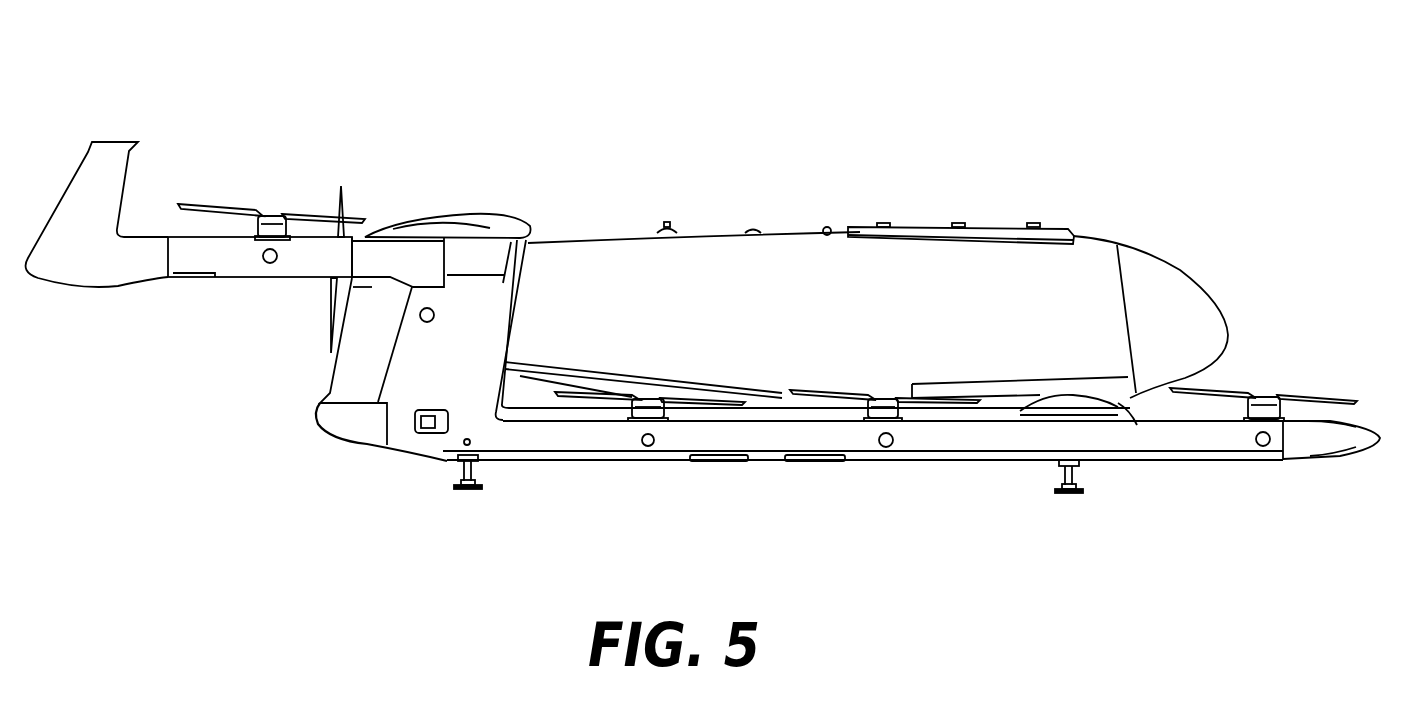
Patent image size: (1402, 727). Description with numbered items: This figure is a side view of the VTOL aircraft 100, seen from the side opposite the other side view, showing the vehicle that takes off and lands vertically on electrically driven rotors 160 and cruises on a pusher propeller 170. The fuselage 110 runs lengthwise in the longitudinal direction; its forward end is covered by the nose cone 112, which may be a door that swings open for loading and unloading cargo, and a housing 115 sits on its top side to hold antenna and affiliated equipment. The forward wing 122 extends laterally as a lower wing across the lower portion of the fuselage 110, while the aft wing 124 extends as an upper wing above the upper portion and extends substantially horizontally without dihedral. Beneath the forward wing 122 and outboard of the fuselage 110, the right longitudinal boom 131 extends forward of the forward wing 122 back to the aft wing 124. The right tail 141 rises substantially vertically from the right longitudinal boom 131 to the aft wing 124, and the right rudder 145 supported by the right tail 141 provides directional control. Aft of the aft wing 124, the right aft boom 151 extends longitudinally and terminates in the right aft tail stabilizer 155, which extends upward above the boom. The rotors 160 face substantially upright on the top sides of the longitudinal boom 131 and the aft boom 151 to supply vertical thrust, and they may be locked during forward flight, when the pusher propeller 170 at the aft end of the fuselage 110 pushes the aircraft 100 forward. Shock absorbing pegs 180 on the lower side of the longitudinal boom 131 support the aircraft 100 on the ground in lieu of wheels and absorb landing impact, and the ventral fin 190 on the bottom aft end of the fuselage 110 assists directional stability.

The VTOL aircraft 100 is at (458, 98).
The fuselage 110 is at (618, 245).
The nose cone 112 is at (1190, 279).
The housing 115 is at (901, 227).
The forward wing 122 is at (1044, 406).
The aft wing 124 is at (503, 212).
The right longitudinal boom 131 is at (1300, 444).
The right tail 141 is at (477, 293).
The right rudder 145 is at (342, 383).
The right aft boom 151 is at (236, 262).
The right aft tail stabilizer 155 is at (106, 148).
The electrically driven rotors 160 is at (244, 212).
The pusher propeller 170 is at (338, 190).
The shock absorbing pegs 180 is at (463, 495).
The ventral fin 190 is at (528, 397).